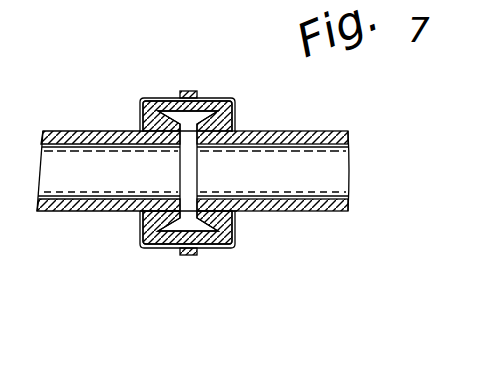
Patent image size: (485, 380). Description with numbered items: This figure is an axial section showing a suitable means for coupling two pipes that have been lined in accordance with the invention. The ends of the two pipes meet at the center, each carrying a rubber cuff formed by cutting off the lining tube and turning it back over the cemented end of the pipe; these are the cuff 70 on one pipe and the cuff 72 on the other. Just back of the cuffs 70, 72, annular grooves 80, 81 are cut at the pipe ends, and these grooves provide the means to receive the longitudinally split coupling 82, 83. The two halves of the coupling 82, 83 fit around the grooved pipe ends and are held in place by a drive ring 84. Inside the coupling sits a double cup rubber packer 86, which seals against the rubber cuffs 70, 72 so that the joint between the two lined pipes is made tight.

The cuff 70 is at (235, 133).
The cuff 72 is at (143, 128).
The annular groove 80 is at (137, 212).
The annular groove 81 is at (238, 212).
The coupling half 82 is at (222, 98).
The coupling half 83 is at (208, 249).
The drive ring 84 is at (188, 90).
The double cup rubber packer 86 is at (157, 248).